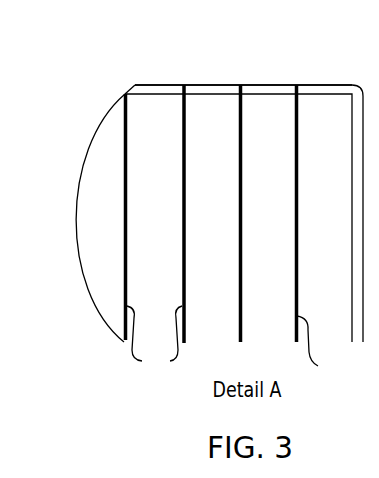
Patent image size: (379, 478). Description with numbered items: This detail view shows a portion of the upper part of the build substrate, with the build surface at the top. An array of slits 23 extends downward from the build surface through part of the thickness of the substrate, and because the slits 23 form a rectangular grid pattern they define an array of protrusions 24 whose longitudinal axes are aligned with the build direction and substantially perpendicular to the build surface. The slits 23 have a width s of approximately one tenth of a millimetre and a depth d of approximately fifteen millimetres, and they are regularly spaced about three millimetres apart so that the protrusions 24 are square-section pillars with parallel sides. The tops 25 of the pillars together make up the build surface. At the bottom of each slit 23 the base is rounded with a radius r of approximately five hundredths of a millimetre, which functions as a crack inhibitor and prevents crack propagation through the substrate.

The slits 23 is at (318, 366).
The protrusions 24 is at (158, 172).
The tops of the pillars 25 is at (163, 84).
The width of the slits s is at (267, 250).
The depth of the slits d is at (332, 93).
The radius of the slit base r is at (238, 332).